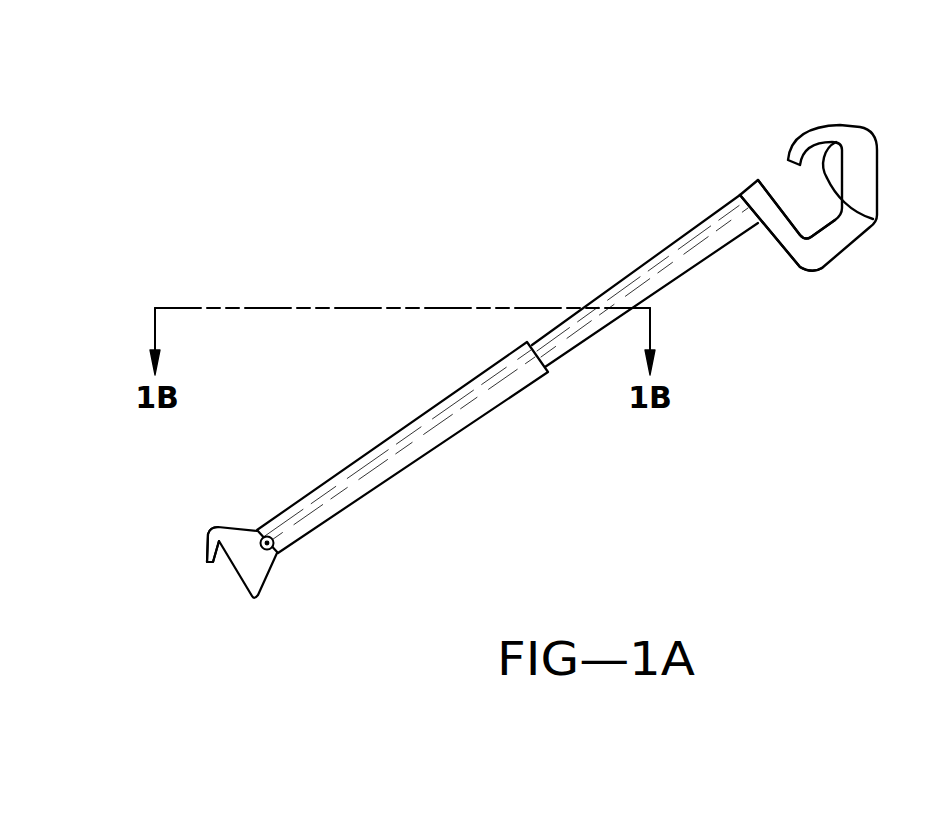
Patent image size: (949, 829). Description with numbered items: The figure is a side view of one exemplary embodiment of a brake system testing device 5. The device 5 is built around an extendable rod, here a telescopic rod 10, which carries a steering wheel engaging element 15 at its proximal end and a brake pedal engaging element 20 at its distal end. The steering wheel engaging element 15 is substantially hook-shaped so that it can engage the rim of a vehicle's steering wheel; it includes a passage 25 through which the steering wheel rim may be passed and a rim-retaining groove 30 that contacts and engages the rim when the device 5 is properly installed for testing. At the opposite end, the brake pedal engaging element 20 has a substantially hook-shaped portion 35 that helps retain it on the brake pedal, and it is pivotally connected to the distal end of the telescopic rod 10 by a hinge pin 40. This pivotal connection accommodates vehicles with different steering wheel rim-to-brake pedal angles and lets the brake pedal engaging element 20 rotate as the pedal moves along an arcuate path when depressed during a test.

The brake system testing device 5 is at (330, 203).
The telescopic rod 10 is at (447, 445).
The steering wheel engaging element 15 is at (865, 129).
The brake pedal engaging element 20 is at (250, 576).
The passage 25 is at (768, 169).
The rim-retaining groove 30 is at (873, 219).
The hook-shaped portion 35 is at (210, 540).
The hinge pin 40 is at (274, 552).